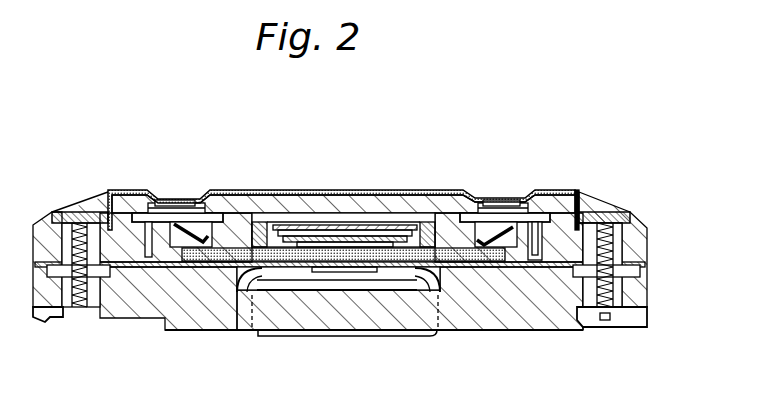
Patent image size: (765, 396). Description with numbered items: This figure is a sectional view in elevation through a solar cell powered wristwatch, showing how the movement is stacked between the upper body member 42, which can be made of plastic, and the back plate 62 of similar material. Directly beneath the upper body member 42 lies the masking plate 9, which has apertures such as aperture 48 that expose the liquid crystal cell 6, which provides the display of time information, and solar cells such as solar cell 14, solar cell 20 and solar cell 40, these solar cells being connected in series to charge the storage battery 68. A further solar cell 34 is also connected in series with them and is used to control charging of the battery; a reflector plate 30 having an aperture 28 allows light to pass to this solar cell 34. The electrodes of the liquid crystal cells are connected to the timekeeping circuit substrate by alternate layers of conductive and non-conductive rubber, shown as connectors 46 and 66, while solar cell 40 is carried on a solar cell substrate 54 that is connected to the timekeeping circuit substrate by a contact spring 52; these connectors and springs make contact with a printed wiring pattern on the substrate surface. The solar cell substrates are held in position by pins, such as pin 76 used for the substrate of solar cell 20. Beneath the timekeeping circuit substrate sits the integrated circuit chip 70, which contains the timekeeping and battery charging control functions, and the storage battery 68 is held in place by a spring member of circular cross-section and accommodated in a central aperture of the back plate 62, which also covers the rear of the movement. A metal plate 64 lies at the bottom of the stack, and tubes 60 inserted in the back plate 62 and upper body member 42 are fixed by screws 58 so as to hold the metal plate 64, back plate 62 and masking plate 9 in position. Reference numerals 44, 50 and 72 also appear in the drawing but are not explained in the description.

The liquid crystal cell 6 is at (302, 213).
The masking plate 9 is at (440, 190).
The solar cell 14 is at (178, 305).
The solar cell 20 is at (167, 198).
The aperture 28 is at (352, 213).
The reflector plate 30 is at (397, 213).
The solar cell 34 is at (290, 263).
The solar cell 40 is at (487, 198).
The upper body member 42 is at (128, 190).
The contact plate 44 is at (187, 200).
The conductive rubber connector 46 is at (263, 192).
The aperture 48 is at (288, 212).
The bonding layer 50 is at (360, 245).
The contact spring 52 is at (503, 200).
The solar cell substrate 54 is at (512, 207).
The screw 58 is at (596, 200).
The tube 60 is at (630, 210).
The back plate 62 is at (553, 302).
The metal plate 64 is at (495, 262).
The conductive rubber connector 66 is at (427, 250).
The storage battery 68 is at (367, 338).
The integrated circuit chip 70 is at (340, 270).
The adhesive layer 72 is at (207, 258).
The pin 76 is at (74, 296).